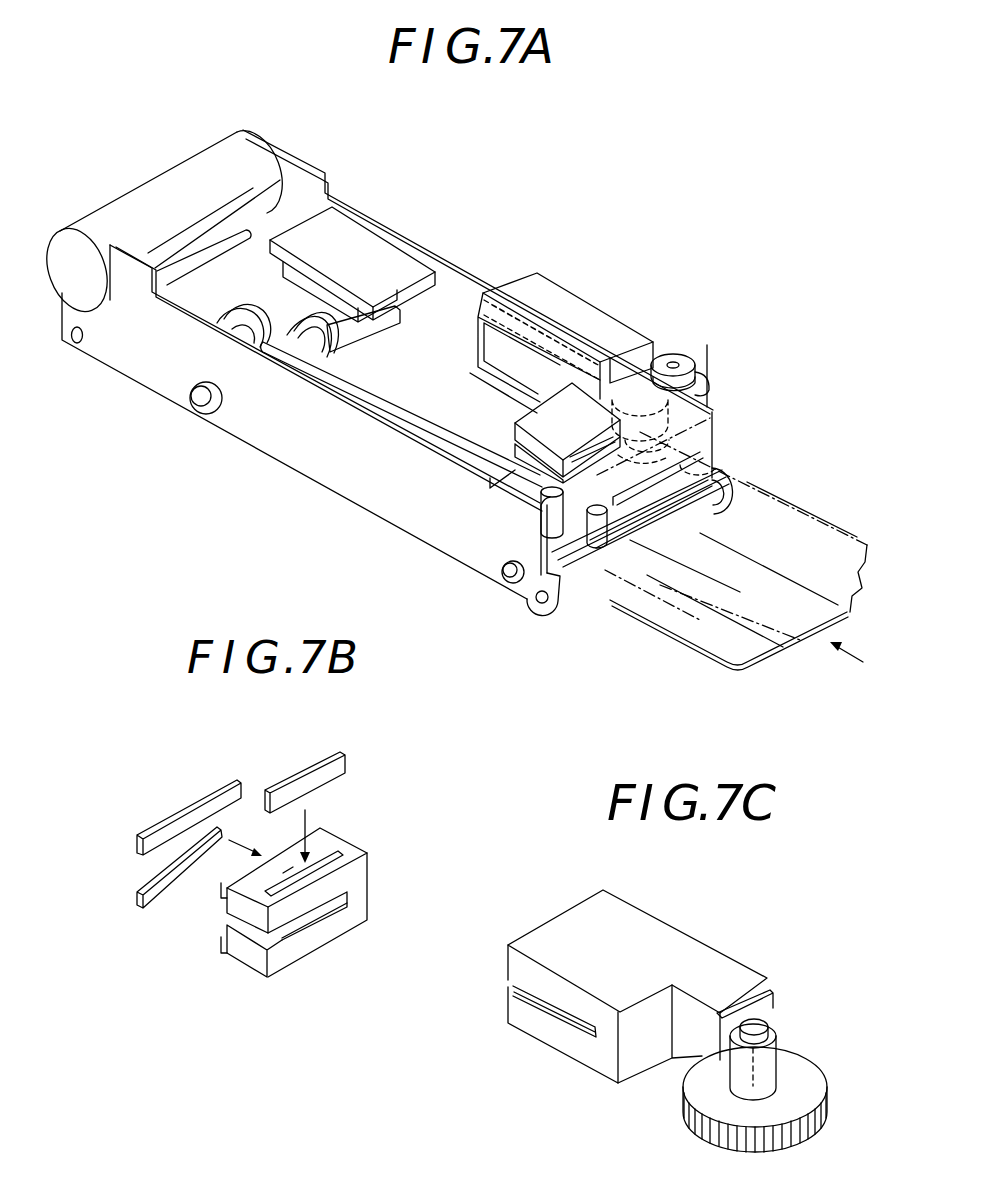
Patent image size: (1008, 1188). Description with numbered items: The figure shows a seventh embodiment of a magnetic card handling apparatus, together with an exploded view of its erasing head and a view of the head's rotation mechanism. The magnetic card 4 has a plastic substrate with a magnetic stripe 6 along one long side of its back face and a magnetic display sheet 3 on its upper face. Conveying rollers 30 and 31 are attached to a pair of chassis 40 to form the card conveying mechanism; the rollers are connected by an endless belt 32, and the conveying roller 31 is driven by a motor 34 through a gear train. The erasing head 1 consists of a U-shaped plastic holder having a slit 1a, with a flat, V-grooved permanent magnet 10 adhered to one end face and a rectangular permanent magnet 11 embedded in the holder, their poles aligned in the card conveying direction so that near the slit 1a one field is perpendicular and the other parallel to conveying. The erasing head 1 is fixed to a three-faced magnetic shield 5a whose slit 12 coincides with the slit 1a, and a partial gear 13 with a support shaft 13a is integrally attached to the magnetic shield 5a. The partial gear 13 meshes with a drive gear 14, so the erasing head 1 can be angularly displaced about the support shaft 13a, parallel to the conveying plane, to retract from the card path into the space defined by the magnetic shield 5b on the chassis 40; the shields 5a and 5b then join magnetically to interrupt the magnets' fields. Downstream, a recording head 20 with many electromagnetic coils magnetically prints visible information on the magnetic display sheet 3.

In FIG. 7B, the erasing head 1 is at (317, 943).
In FIG. 7B, the slit 1a is at (282, 935).
In FIG. 7A, the magnetic display sheet 3 is at (783, 547).
In FIG. 7A, the magnetic card 4 is at (785, 620).
In FIG. 7A, the magnetic shield 5a is at (530, 460).
In FIG. 7C, the magnetic shield 5a is at (562, 927).
In FIG. 7A, the magnetic shield 5b is at (547, 285).
In FIG. 7A, the magnetic stripe 6 is at (760, 647).
In FIG. 7B, the flat permanent magnet 10 is at (177, 825).
In FIG. 7B, the rectangular permanent magnet 11 is at (343, 767).
In FIG. 7A, the slit 12 is at (588, 443).
In FIG. 7C, the slit 12 is at (494, 984).
In FIG. 7A, the partial gear 13 is at (610, 360).
In FIG. 7C, the partial gear 13 is at (807, 1070).
In FIG. 7C, the support shaft 13a is at (753, 1027).
In FIG. 7A, the drive gear 14 is at (712, 388).
In FIG. 7A, the recording head 20 is at (372, 245).
In FIG. 7A, the conveying roller 30 is at (538, 510).
In FIG. 7A, the conveying roller 31 is at (263, 345).
In FIG. 7A, the endless belt 32 is at (383, 401).
In FIG. 7A, the motor 34 is at (135, 210).
In FIG. 7A, the chassis 40 is at (455, 283).